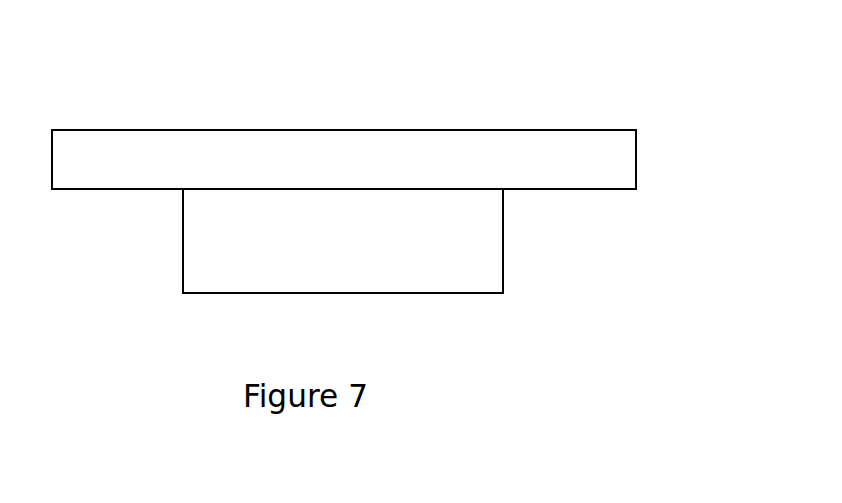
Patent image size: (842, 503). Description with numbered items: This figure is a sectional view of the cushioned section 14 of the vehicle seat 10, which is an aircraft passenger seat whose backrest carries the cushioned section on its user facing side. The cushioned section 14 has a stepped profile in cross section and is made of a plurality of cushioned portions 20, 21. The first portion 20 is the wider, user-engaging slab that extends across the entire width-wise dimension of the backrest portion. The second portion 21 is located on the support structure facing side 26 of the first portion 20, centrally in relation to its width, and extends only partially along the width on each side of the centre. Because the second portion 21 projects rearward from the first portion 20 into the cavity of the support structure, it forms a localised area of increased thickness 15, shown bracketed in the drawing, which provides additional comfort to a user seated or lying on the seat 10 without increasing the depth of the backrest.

The vehicle seat 10 is at (663, 97).
The cushioned section 14 is at (344, 211).
The first portion of the cushioned section 20 is at (110, 147).
The second portion of the cushioned section 21 is at (212, 256).
The support structure facing side 26 is at (100, 189).
The localised area of increased thickness 15 is at (670, 188).